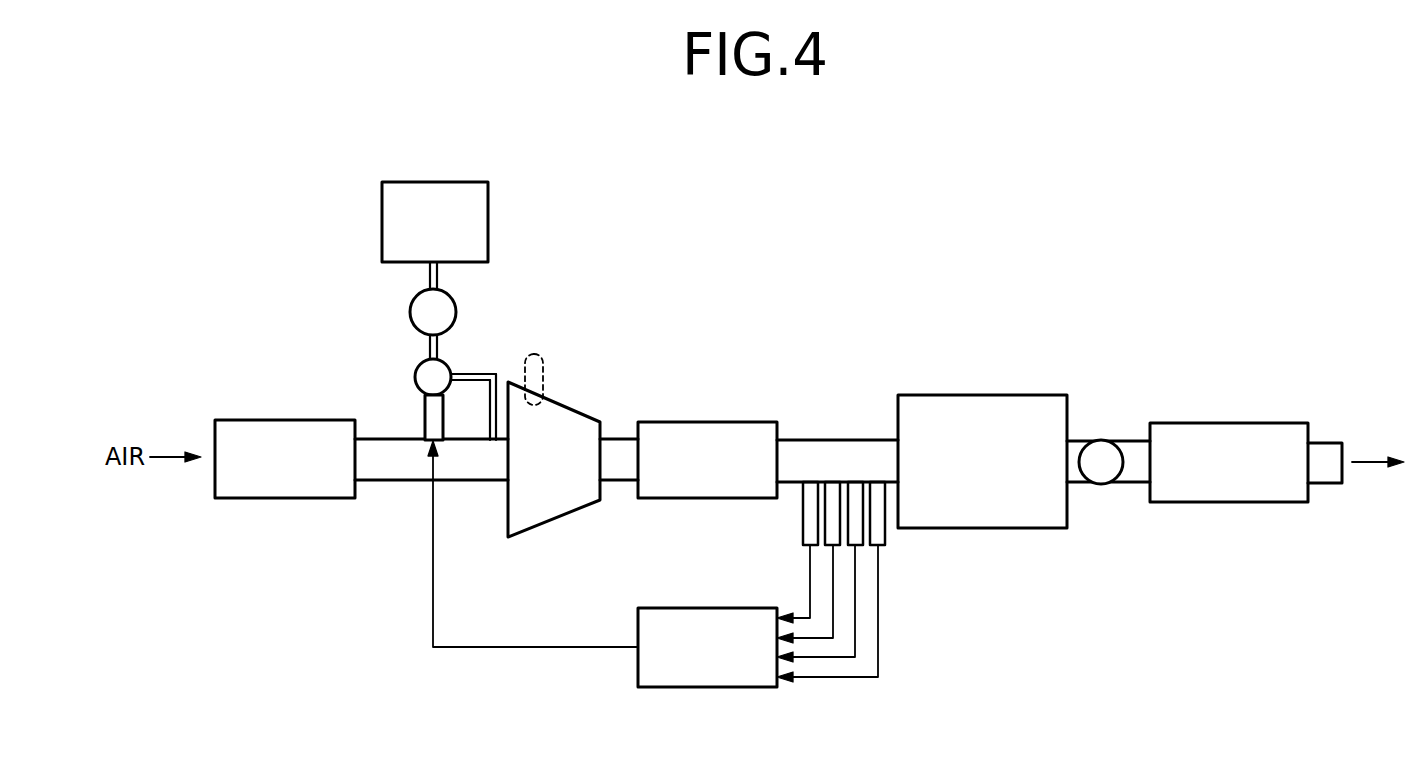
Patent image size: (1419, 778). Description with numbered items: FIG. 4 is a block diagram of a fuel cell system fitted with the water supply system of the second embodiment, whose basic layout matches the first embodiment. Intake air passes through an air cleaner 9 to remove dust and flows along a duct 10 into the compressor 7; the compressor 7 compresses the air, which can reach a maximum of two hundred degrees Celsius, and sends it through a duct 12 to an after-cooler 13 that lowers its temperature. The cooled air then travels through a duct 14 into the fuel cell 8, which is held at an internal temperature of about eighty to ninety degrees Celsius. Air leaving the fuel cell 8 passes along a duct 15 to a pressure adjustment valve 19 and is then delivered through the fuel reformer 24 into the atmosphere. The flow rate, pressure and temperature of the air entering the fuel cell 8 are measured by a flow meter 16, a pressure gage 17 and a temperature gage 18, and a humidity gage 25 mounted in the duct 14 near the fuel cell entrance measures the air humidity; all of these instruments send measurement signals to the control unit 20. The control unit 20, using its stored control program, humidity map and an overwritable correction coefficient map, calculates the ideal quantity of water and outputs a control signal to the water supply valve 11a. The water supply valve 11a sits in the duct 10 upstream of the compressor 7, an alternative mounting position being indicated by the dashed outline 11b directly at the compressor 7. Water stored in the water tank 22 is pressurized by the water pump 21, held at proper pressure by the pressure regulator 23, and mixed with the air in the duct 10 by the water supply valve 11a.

The compressor 7 is at (583, 500).
The fuel cell 8 is at (924, 395).
The air cleaner 9 is at (237, 500).
The duct 10 is at (392, 481).
The water supply valve 11a is at (425, 416).
The water supply valve (alternative position) 11b is at (545, 345).
The duct 12 is at (624, 439).
The after-cooler 13 is at (736, 422).
The duct 14 is at (877, 440).
The duct 15 is at (1079, 440).
The flow meter 16 is at (838, 547).
The pressure gage 17 is at (861, 547).
The temperature gage 18 is at (885, 547).
The pressure adjustment valve 19 is at (1152, 332).
The control unit 20 is at (668, 608).
The water pump 21 is at (410, 313).
The water tank 22 is at (406, 182).
The pressure regulator 23 is at (450, 363).
The fuel reformer 24 is at (1284, 423).
The humidity gage 25 is at (815, 547).